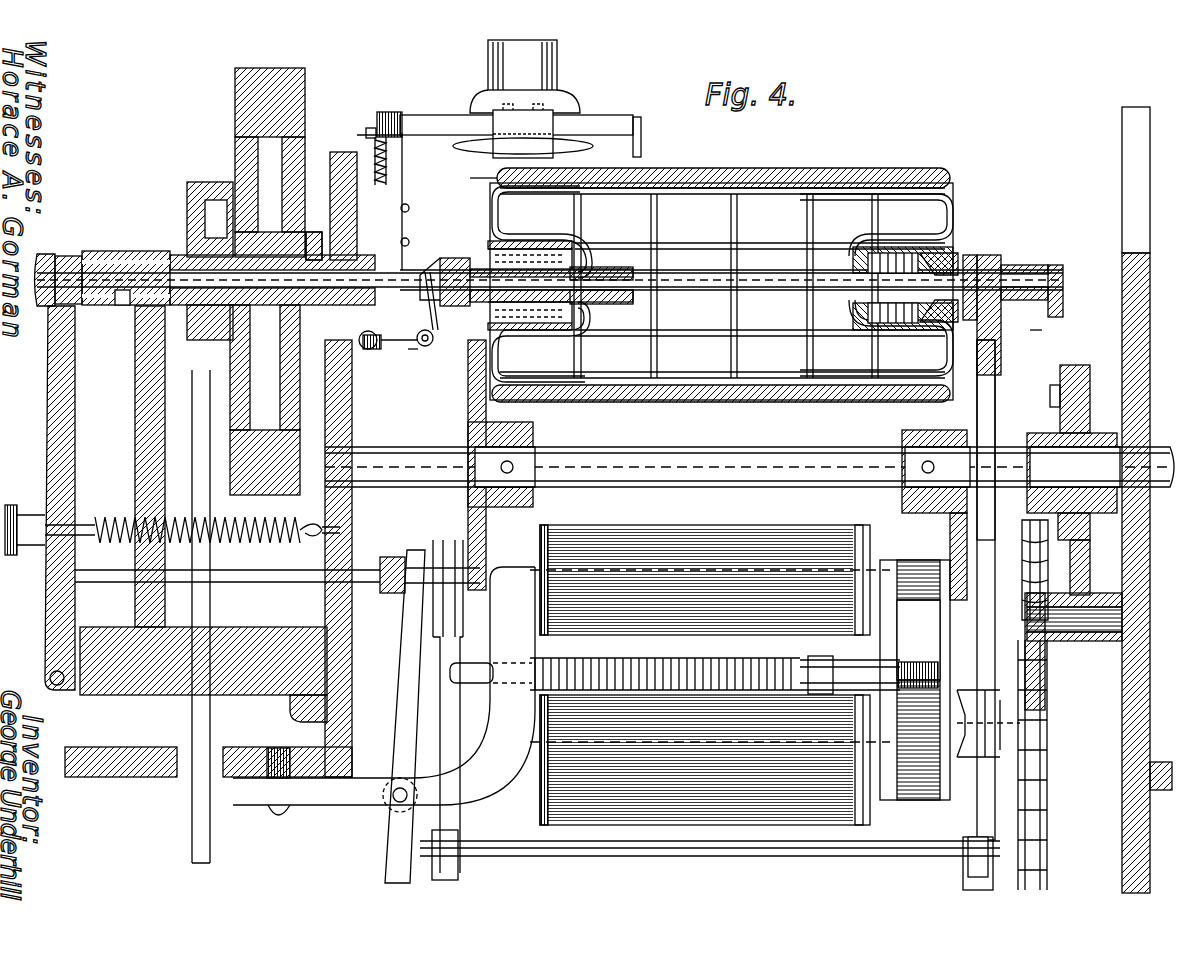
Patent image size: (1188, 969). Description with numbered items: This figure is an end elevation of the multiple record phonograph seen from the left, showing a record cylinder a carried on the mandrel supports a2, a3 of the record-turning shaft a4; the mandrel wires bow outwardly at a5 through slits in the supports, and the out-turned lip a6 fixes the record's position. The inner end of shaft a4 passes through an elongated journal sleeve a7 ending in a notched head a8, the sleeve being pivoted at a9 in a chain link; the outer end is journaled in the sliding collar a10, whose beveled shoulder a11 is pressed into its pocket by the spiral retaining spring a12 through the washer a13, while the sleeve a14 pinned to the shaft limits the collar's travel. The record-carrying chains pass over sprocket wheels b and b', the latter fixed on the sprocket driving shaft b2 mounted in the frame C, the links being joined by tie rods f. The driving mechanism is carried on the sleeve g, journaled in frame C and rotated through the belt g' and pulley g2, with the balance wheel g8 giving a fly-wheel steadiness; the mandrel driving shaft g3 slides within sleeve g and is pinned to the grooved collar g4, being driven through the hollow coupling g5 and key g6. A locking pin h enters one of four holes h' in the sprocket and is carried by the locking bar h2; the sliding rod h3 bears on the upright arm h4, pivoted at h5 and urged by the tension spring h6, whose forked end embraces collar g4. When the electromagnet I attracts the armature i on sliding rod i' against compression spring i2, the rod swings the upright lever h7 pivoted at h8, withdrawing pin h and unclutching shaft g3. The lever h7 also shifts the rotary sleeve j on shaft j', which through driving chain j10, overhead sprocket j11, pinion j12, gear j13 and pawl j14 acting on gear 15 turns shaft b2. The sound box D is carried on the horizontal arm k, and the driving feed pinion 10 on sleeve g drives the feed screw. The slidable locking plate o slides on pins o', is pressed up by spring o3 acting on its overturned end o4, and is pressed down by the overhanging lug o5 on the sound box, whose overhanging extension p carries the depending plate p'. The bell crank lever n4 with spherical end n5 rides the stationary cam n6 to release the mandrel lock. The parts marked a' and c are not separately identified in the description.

The frame C is at (135, 378).
The driving sleeve g is at (550, 246).
The belt g' is at (189, 616).
The pulley g2 is at (188, 185).
The mandrel driving shaft g3 is at (130, 255).
The grooved collar g4 is at (40, 305).
The hollow coupling g5 is at (120, 303).
The key g6 is at (70, 255).
The balance wheel g8 is at (305, 95).
The horizontal arm k is at (314, 232).
The driving feed pinion 10 is at (316, 229).
The slidable locking plate o is at (376, 201).
The pins o' is at (422, 223).
The spring o3 is at (375, 145).
The overturned end o4 is at (371, 128).
The overhanging lug o5 is at (400, 113).
The sound box D is at (580, 98).
The overhanging extension p is at (527, 123).
The depending plate p' is at (564, 138).
The record cylinder a is at (721, 267).
The field bars a' is at (722, 283).
The inner mandrel support a2 is at (490, 242).
The outer mandrel support a3 is at (957, 258).
The record-turning shaft a4 is at (682, 292).
The outward bow of mandrel wires a5 is at (492, 208).
The out-turned lip a6 is at (490, 185).
The elongated journal sleeve a7 is at (490, 268).
The notched head a8 is at (442, 272).
The pivot a9 is at (433, 328).
The sliding collar a10 is at (978, 270).
The beveled shoulder a11 is at (1003, 303).
The spiral retaining spring a12 is at (853, 262).
The washer a13 is at (1038, 332).
The sleeve a14 is at (1063, 275).
The block c is at (1001, 348).
The bell crank lever n4 is at (410, 345).
The spherical end n5 is at (372, 349).
The stationary cam n6 is at (362, 337).
The sprocket wheel b is at (508, 465).
The sprocket wheel b' is at (919, 461).
The sprocket driving shaft b2 is at (692, 452).
The electromagnet I is at (745, 570).
The armature i is at (912, 680).
The sliding rod i' is at (869, 688).
The compression spring i2 is at (682, 692).
The tie rods f is at (705, 857).
The rotary sleeve j is at (981, 615).
The gear 15 is at (999, 440).
The shaft j' is at (986, 556).
The driving chain j10 is at (1047, 848).
The overhead sprocket wheel j11 is at (1035, 570).
The pinion j12 is at (1048, 672).
The gear j13 is at (1090, 548).
The pawl j14 is at (1050, 398).
The locking pin h is at (405, 694).
The holes h' is at (467, 587).
The locking bar h2 is at (385, 593).
The sliding rod h3 is at (268, 583).
The upright arm h4 is at (75, 500).
The pivot h5 is at (58, 690).
The spiral tension spring h6 is at (300, 528).
The upright lever h7 is at (440, 700).
The pivot h8 is at (385, 803).